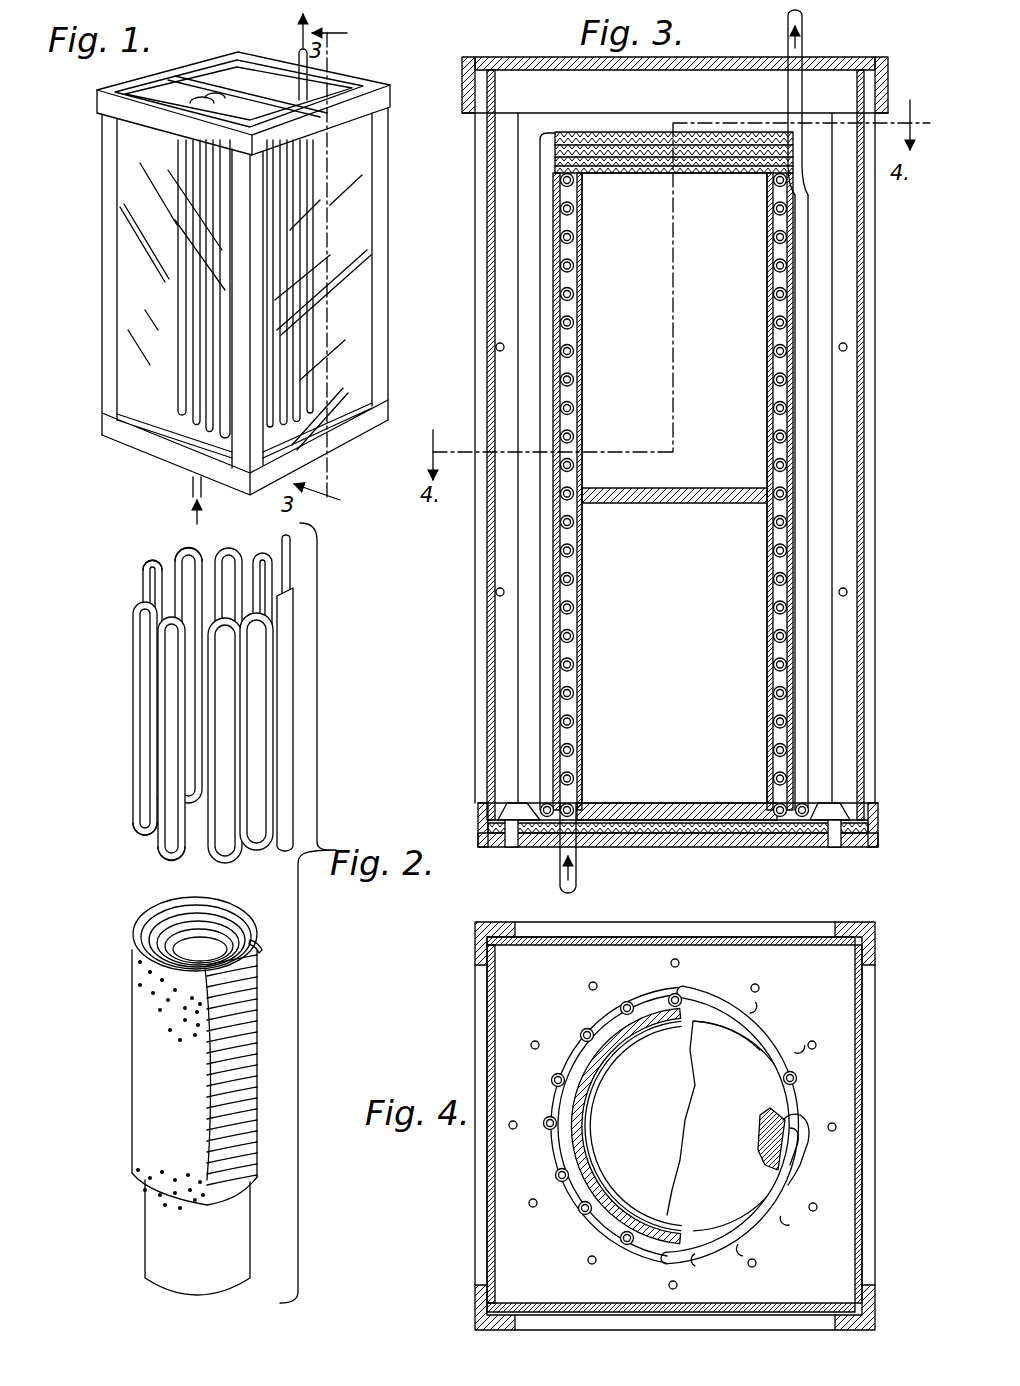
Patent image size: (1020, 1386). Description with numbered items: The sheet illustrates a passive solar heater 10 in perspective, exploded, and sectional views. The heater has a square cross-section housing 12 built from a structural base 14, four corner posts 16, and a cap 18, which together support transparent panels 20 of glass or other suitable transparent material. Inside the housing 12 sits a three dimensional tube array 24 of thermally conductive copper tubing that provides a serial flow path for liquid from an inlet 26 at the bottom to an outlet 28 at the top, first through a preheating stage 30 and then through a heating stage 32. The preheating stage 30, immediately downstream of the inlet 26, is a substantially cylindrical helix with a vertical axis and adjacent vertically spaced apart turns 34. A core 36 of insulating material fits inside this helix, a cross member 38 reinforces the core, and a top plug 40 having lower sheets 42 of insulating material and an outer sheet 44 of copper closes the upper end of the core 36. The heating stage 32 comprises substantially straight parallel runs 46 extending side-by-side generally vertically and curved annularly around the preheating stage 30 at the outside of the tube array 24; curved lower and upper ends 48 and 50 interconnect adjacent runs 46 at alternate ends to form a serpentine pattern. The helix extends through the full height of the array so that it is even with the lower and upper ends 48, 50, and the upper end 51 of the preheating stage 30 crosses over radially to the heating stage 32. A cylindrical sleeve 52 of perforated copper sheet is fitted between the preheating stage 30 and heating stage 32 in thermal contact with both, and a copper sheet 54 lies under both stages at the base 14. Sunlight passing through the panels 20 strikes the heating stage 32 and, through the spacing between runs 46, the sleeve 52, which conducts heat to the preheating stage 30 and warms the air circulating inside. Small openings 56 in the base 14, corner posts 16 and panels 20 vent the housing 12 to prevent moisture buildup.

In FIG. 1, the passive solar heater 10 is at (98, 256).
In FIG. 1, the housing 12 is at (98, 378).
In FIG. 4, the housing 12 is at (835, 920).
In FIG. 1, the structural base 14 is at (128, 450).
In FIG. 3, the structural base 14 is at (712, 847).
In FIG. 1, the corner posts 16 is at (100, 176).
In FIG. 4, the corner posts 16 is at (476, 935).
In FIG. 1, the cap 18 is at (364, 84).
In FIG. 3, the cap 18 is at (888, 78).
In FIG. 1, the transparent panels 20 is at (130, 103).
In FIG. 3, the transparent panels 20 is at (720, 58).
In FIG. 4, the transparent panels 20 is at (700, 937).
In FIG. 1, the tube array 24 is at (322, 196).
In FIG. 3, the tube array 24 is at (815, 385).
In FIG. 4, the tube array 24 is at (540, 1072).
In FIG. 1, the inlet 26 is at (190, 490).
In FIG. 3, the inlet 26 is at (580, 869).
In FIG. 1, the outlet 28 is at (300, 52).
In FIG. 3, the outlet 28 is at (804, 36).
In FIG. 2, the preheating stage 30 is at (262, 1020).
In FIG. 3, the preheating stage 30 is at (778, 507).
In FIG. 4, the preheating stage 30 is at (608, 1062).
In FIG. 2, the heating stage 32 is at (296, 680).
In FIG. 3, the heating stage 32 is at (812, 440).
In FIG. 4, the heating stage 32 is at (775, 1040).
In FIG. 2, the turns 34 is at (258, 1080).
In FIG. 3, the turns 34 is at (774, 690).
In FIG. 2, the core 36 is at (162, 1238).
In FIG. 3, the core 36 is at (767, 545).
In FIG. 4, the core 36 is at (600, 1182).
In FIG. 3, the cross member 38 is at (665, 488).
In FIG. 4, the cross member 38 is at (653, 1138).
In FIG. 3, the top plug 40 is at (567, 120).
In FIG. 3, the lower sheets 42 is at (697, 178).
In FIG. 3, the outer sheet 44 is at (643, 132).
In FIG. 4, the outer sheet 44 is at (736, 1172).
In FIG. 2, the runs 46 is at (248, 746).
In FIG. 4, the runs 46 is at (583, 1032).
In FIG. 2, the lower ends 48 is at (172, 862).
In FIG. 3, the lower ends 48 is at (545, 806).
In FIG. 4, the lower ends 48 is at (566, 1195).
In FIG. 2, the upper ends 50 is at (185, 550).
In FIG. 4, the upper ends 50 is at (742, 1008).
In FIG. 2, the upper end of the preheating stage 51 is at (258, 942).
In FIG. 4, the upper end of the preheating stage 51 is at (800, 1127).
In FIG. 3, the cylindrical sleeve 52 is at (553, 357).
In FIG. 3, the copper sheet 54 is at (829, 817).
In FIG. 3, the small openings 56 is at (498, 345).
In FIG. 4, the small openings 56 is at (513, 1131).